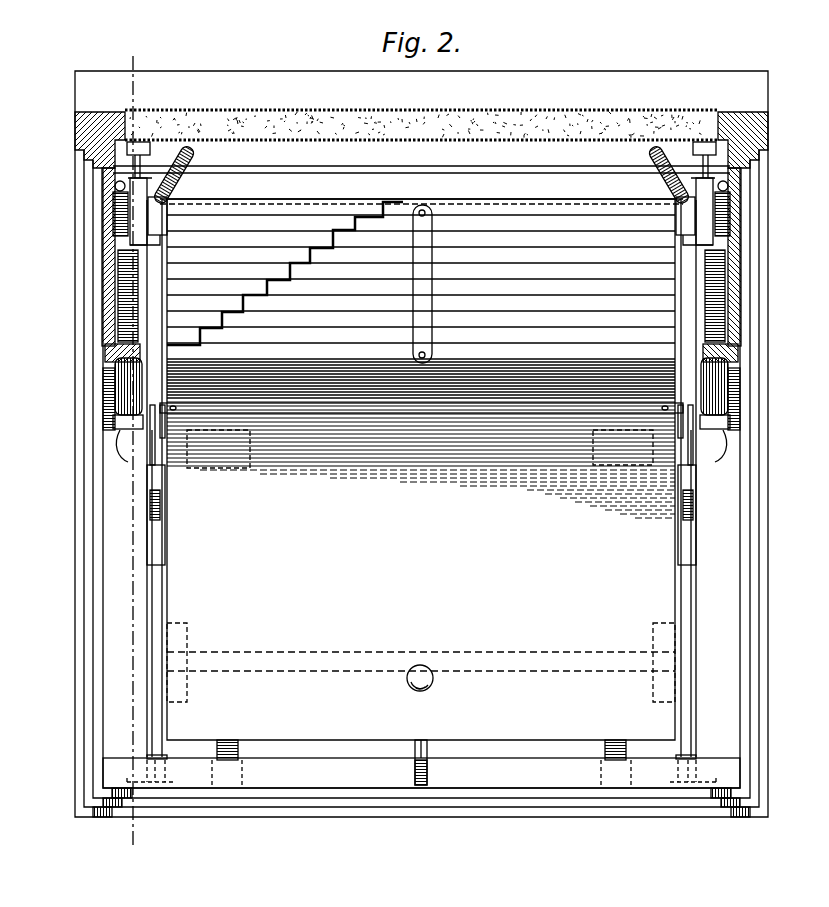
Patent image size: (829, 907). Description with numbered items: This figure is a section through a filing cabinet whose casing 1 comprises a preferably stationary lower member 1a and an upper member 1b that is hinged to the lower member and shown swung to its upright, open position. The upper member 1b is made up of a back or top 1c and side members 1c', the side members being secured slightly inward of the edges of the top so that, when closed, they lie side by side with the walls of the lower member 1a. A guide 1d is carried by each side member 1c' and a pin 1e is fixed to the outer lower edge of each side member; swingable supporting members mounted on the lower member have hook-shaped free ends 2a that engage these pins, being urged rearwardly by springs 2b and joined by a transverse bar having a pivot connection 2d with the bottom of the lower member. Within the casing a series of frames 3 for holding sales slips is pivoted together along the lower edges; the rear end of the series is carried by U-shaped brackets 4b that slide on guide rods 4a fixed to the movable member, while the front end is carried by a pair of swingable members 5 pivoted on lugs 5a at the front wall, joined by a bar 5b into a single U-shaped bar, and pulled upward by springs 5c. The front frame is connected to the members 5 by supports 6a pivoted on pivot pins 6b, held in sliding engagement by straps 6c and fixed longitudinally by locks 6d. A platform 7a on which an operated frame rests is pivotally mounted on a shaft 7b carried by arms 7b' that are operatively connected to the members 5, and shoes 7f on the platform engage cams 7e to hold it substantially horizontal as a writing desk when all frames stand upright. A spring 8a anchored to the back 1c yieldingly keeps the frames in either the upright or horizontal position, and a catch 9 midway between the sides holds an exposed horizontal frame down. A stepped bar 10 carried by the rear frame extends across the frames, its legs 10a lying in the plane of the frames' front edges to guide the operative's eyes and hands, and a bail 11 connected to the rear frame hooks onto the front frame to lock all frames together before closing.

The casing 1 is at (372, 812).
The lower member 1a is at (400, 483).
The upper member 1b is at (76, 150).
The back or top 1c is at (421, 109).
The side members 1c' is at (418, 257).
The guides 1d is at (105, 352).
The pin 1e is at (157, 440).
The hook-shaped free ends 2a is at (108, 425).
The springs 2b is at (118, 322).
The pivot connection 2d is at (593, 435).
The frames 3 is at (399, 453).
The guides 4a is at (128, 240).
The bracket or U-shaped member 4b is at (143, 178).
The swingable members 5 is at (153, 322).
The lugs 5a is at (172, 757).
The connecting member or bar 5b is at (330, 199).
The springs 5c is at (113, 208).
The support 6a is at (160, 425).
The pivot pin 6b is at (188, 418).
The strap or loop 6c is at (150, 502).
The lock 6d is at (166, 542).
The base or platform 7a is at (421, 469).
The transverse shaft or rod 7b is at (421, 659).
The arms 7b' is at (421, 647).
The cams 7e is at (248, 771).
The shoes 7f is at (238, 748).
The spring 8a is at (182, 188).
The catch 9 is at (428, 775).
The signal and guide device 10 is at (290, 275).
The legs or sections 10a is at (355, 232).
The bail 11 is at (433, 301).